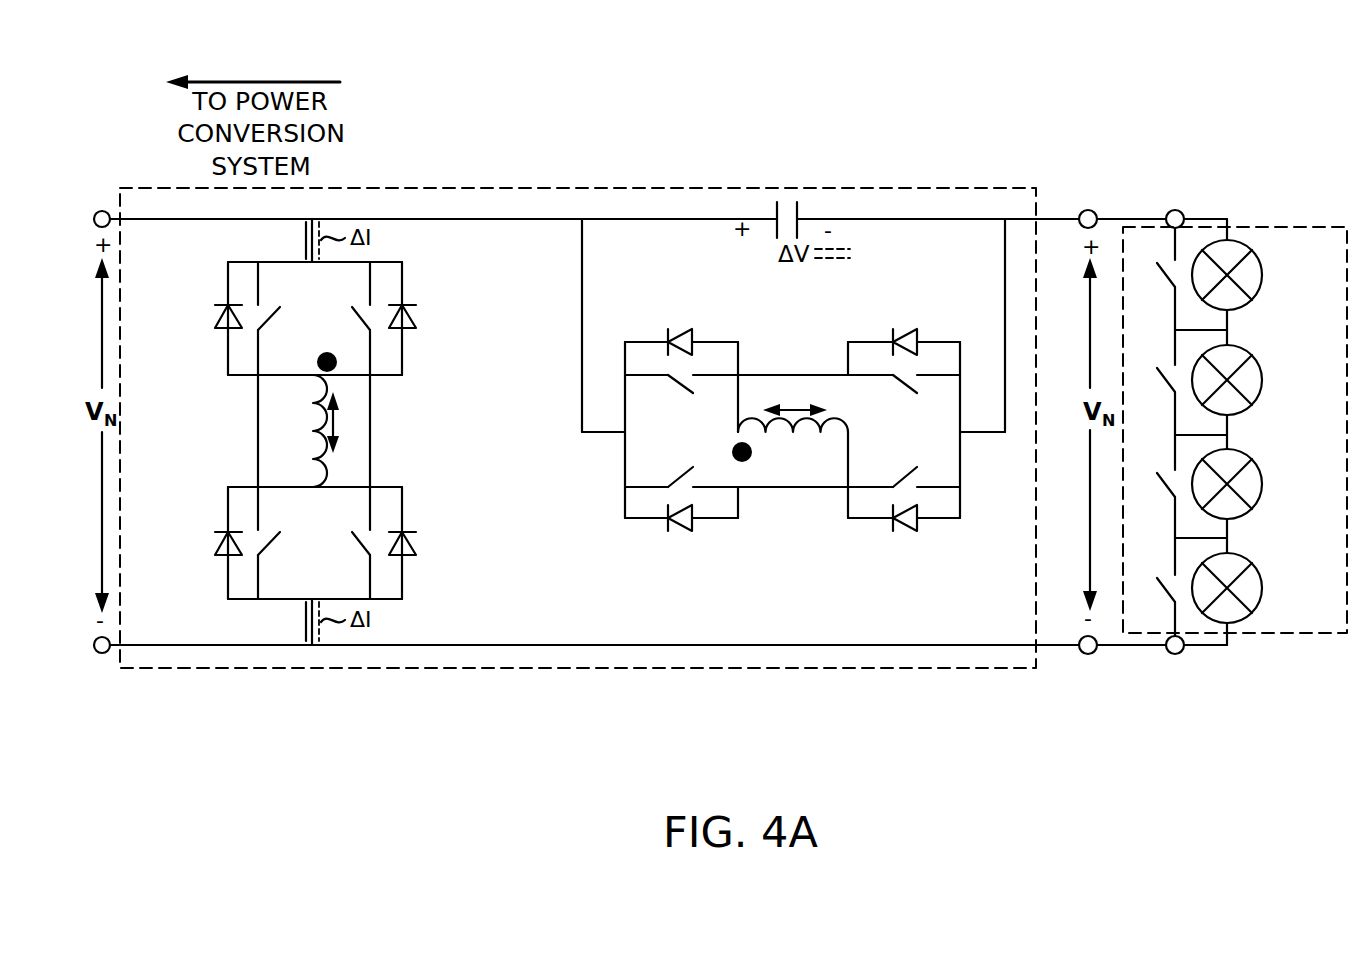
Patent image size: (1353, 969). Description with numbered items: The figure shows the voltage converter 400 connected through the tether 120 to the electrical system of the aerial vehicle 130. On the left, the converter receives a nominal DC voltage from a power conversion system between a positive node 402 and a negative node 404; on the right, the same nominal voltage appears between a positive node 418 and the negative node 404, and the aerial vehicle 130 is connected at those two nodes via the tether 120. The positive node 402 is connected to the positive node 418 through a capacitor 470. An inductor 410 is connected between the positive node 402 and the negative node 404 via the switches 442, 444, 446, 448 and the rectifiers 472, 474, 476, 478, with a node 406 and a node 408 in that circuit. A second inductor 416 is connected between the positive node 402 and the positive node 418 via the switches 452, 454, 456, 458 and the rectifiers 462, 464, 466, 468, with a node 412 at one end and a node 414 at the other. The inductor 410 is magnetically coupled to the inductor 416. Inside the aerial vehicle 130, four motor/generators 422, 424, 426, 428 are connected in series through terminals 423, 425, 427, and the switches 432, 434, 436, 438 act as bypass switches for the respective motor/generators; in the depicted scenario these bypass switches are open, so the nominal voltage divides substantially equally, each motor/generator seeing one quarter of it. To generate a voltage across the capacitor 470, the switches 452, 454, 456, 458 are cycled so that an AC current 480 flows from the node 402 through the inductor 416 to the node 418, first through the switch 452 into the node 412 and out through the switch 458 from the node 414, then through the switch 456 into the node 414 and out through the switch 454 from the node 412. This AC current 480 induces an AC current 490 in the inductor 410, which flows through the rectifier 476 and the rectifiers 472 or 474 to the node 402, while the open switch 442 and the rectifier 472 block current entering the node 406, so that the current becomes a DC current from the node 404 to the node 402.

The tether 120 is at (1108, 415).
The aerial vehicle 130 is at (1235, 376).
The voltage converter 400 is at (578, 375).
The positive node 402 is at (182, 221).
The negative node 404 is at (217, 644).
The node 406 is at (258, 443).
The node 408 is at (370, 447).
The inductor 410 is at (310, 470).
The node 412 is at (805, 373).
The node 414 is at (788, 490).
The inductor 416 is at (823, 433).
The positive node 418 is at (920, 220).
The motor/generator 422 is at (1262, 278).
The terminal 423 is at (1229, 338).
The motor/generator 424 is at (1262, 380).
The terminal 425 is at (1229, 441).
The motor/generator 426 is at (1262, 483).
The terminal 427 is at (1229, 544).
The motor/generator 428 is at (1262, 585).
The switch 432 is at (1162, 272).
The switch 434 is at (1162, 377).
The switch 436 is at (1162, 480).
The switch 438 is at (1162, 585).
The switch 442 is at (270, 312).
The switch 444 is at (357, 316).
The switch 446 is at (349, 556).
The switch 448 is at (265, 548).
The switch 452 is at (682, 386).
The switch 454 is at (904, 386).
The switch 456 is at (682, 478).
The switch 458 is at (904, 478).
The rectifier 462 is at (670, 328).
The rectifier 464 is at (893, 328).
The rectifier 466 is at (668, 530).
The rectifier 468 is at (893, 530).
The capacitor 470 is at (775, 240).
The rectifier 472 is at (218, 320).
The rectifier 474 is at (412, 320).
The rectifier 476 is at (218, 540).
The rectifier 478 is at (411, 540).
The AC current 480 is at (790, 408).
The AC current 490 is at (338, 426).